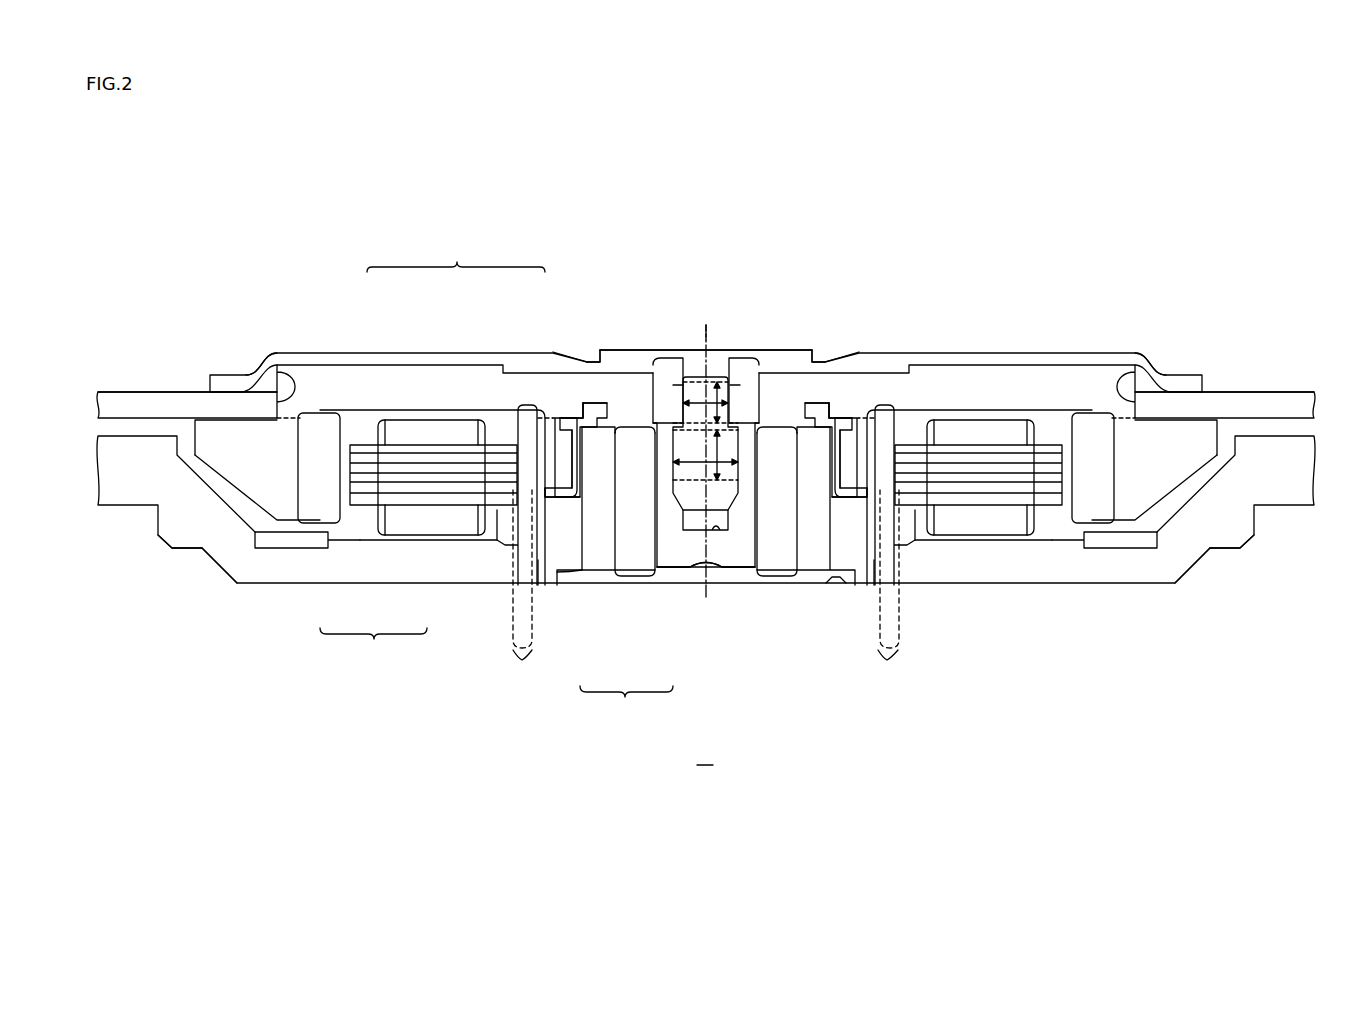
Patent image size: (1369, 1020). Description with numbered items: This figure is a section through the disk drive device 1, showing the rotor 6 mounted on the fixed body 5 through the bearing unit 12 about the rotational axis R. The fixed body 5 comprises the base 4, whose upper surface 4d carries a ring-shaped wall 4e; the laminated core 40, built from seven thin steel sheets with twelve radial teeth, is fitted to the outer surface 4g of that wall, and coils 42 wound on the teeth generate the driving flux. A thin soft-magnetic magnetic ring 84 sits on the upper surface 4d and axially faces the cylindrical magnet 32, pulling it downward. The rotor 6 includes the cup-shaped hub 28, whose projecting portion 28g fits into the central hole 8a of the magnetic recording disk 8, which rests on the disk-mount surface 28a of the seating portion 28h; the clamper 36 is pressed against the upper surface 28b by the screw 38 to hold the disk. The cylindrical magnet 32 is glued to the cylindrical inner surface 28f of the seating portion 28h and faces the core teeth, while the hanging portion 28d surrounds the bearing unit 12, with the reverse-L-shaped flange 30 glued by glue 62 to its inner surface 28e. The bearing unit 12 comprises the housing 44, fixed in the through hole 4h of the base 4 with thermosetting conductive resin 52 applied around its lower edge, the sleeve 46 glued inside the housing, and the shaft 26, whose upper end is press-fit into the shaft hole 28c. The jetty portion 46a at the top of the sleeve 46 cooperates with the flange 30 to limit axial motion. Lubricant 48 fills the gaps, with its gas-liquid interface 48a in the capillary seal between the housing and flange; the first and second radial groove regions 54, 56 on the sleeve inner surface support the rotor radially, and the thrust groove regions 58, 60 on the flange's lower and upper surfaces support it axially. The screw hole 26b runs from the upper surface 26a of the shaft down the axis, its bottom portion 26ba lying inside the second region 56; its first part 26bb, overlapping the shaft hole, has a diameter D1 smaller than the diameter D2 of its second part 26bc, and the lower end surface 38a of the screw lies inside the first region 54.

The disk drive device 1 is at (705, 754).
The base 4 is at (333, 575).
The upper surface 4d is at (455, 565).
The ring-shaped wall 4e is at (705, 586).
The outer surface 4g is at (520, 575).
The through hole 4h is at (580, 577).
The fixed body 5 is at (373, 646).
The rotor 6 is at (456, 254).
The magnetic recording disk 8 is at (115, 395).
The central hole 8a is at (272, 370).
The bearing unit 12 is at (626, 704).
The shaft 26 is at (665, 572).
The upper surface 26a is at (724, 400).
The screw hole for affixing the disk 26b is at (739, 460).
The bottom portion 26ba is at (706, 540).
The first part 26bb is at (712, 400).
The second part 26bc is at (695, 570).
The hub 28 is at (455, 352).
The disk-mount surface 28a is at (208, 412).
The upper surface 28b is at (675, 385).
The shaft hole 28c is at (662, 360).
The hanging portion 28d is at (540, 565).
The inner surface 28e is at (556, 440).
The cylindrical inner surface 28f is at (222, 560).
The projecting portion 28g is at (300, 365).
The seating portion 28h is at (190, 560).
The flange 30 is at (557, 430).
The cylindrical magnet 32 is at (323, 437).
The clamper 36 is at (418, 430).
The screw for affixing the disk 38 is at (600, 350).
The lower end surface 38a is at (668, 358).
The laminated core 40 is at (372, 500).
The coils 42 is at (420, 510).
The housing 44 is at (603, 575).
The sleeve 46 is at (790, 548).
The jetty portion 46a is at (584, 405).
The lubricant 48 is at (776, 580).
The gas-liquid interface 48a is at (578, 505).
The thermosetting conductive resin 52 is at (832, 590).
The first radial dynamic pressure generation groove forming region 54 is at (652, 455).
The second radial dynamic pressure generation groove forming region 56 is at (672, 570).
The first thrust dynamic pressure generation groove forming region 58 is at (588, 432).
The second thrust dynamic pressure generation groove forming region 60 is at (595, 402).
The glue 62 is at (560, 500).
The magnetic ring 84 is at (290, 550).
The diameter D1 is at (683, 403).
The diameter D2 is at (673, 462).
The rotational axis R is at (707, 318).